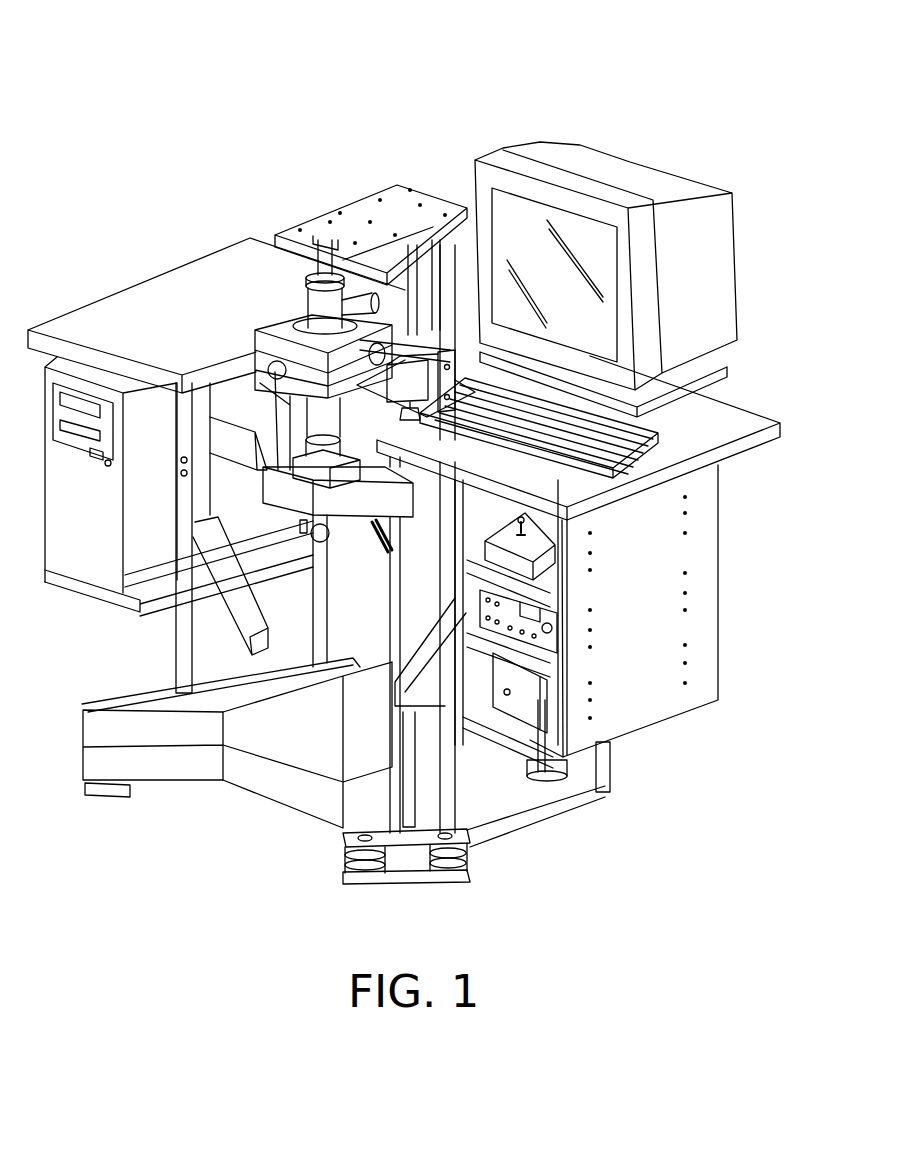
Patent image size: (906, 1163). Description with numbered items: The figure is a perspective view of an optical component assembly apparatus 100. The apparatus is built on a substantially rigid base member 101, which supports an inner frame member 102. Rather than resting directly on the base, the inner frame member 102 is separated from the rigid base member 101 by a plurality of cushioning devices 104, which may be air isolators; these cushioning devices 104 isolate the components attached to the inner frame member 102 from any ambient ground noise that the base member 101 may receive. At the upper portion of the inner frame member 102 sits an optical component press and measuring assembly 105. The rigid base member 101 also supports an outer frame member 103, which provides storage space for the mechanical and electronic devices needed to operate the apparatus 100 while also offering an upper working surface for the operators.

The optical component assembly apparatus 100 is at (212, 128).
The substantially rigid base member 101 is at (560, 808).
The inner frame member 102 is at (380, 595).
The outer frame member 103 is at (752, 420).
The cushioning devices 104 is at (470, 855).
The optical component press and measuring assembly 105 is at (350, 207).